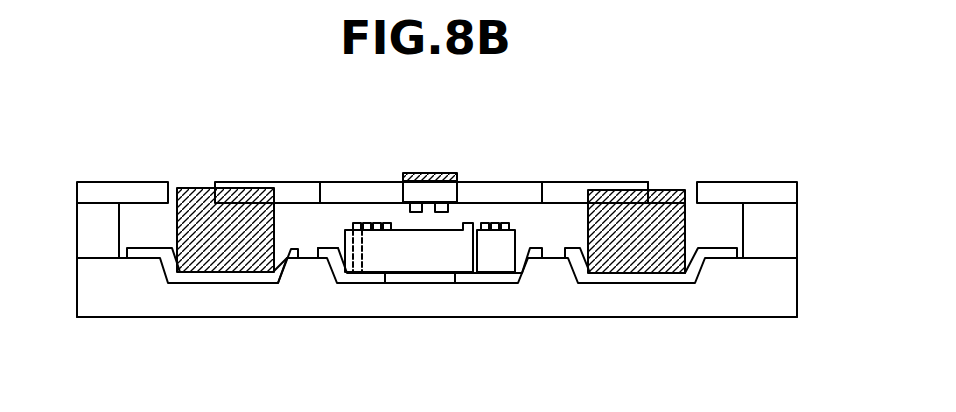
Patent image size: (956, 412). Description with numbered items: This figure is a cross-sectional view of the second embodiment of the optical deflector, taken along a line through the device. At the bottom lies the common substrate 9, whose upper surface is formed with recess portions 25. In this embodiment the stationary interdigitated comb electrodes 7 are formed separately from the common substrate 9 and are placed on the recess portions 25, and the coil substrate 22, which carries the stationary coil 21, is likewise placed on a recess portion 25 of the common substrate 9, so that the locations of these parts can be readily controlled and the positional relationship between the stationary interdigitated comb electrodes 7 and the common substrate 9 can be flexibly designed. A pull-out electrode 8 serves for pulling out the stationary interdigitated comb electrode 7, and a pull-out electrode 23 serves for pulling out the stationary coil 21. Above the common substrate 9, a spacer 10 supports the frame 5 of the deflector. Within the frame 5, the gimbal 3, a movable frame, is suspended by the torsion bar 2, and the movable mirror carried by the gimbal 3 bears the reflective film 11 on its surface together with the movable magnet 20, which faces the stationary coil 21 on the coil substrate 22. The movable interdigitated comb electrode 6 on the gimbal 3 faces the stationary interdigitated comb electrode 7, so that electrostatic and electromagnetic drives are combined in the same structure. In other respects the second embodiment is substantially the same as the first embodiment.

The torsion bar 2 is at (357, 182).
The gimbal 3 is at (560, 182).
The frame 5 is at (722, 182).
The movable interdigitated comb electrode 6 is at (630, 190).
The stationary interdigitated comb electrode 7 is at (675, 190).
The pull-out electrode 8 is at (725, 260).
The common substrate 9 is at (180, 308).
The spacer 10 is at (100, 242).
The reflective film 11 is at (437, 173).
The movable magnet 20 is at (448, 208).
The stationary coil 21 is at (385, 223).
The coil substrate 22 is at (490, 253).
The pull-out electrode 23 is at (325, 248).
The recess portion 25 is at (245, 300).